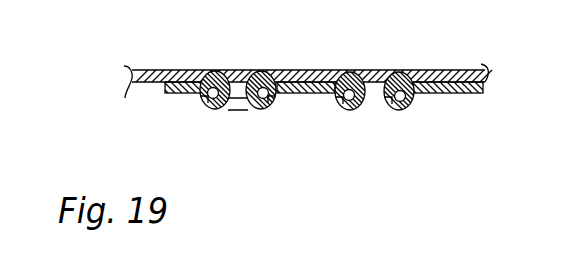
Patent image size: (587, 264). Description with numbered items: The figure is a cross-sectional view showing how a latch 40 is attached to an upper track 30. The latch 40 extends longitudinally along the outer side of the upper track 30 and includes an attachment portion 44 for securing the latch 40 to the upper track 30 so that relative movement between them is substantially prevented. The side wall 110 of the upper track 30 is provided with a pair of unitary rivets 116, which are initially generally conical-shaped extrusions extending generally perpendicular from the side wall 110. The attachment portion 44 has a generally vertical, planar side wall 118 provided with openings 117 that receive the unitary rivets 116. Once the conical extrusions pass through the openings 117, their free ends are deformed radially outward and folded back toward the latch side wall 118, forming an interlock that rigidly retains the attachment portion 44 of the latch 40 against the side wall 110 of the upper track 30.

The upper track 30 is at (179, 66).
The latch 40 is at (176, 97).
The attachment portion 44 is at (460, 100).
The side wall 110 is at (456, 68).
The unitary rivets 116 is at (210, 113).
The openings 117 is at (229, 70).
The side wall 118 is at (297, 95).